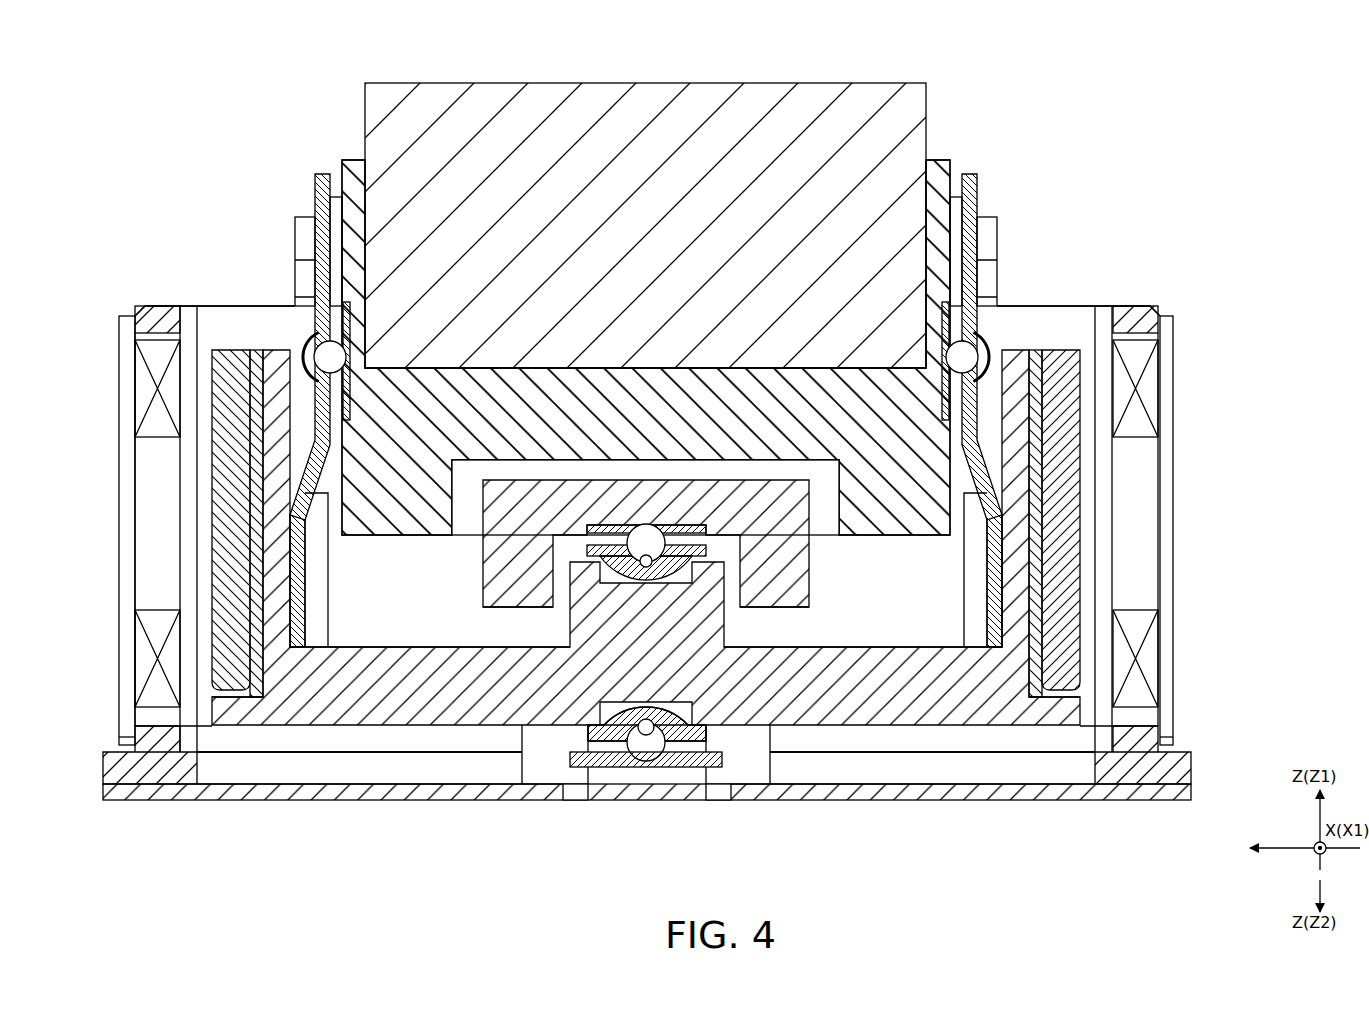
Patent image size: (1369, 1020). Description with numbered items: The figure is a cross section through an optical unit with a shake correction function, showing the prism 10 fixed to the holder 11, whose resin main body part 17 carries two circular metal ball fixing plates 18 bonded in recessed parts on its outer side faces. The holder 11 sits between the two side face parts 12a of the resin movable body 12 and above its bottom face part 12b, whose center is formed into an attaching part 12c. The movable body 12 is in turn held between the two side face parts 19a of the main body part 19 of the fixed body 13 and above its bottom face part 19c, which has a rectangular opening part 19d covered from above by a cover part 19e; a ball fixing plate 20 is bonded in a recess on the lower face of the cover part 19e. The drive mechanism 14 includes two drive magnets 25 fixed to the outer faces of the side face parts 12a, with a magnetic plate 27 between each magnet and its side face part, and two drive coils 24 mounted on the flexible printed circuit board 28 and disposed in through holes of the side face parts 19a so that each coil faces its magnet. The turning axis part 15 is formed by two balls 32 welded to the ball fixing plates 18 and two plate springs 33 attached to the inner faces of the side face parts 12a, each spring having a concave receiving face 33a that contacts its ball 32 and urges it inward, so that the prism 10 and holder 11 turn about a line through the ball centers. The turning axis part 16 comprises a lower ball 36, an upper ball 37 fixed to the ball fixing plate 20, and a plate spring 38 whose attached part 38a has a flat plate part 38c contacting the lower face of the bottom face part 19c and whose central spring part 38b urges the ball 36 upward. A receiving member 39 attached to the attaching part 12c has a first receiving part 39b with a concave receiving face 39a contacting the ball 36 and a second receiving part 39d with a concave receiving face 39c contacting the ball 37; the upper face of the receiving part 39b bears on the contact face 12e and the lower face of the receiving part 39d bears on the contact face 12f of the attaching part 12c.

The prism 10 is at (641, 83).
The holder 11 is at (940, 160).
The main body part 17 is at (940, 160).
The movable body 12 is at (300, 600).
The side face part 12a is at (990, 590).
The bottom face part 12b is at (858, 647).
The attaching part 12c is at (735, 635).
The contact face 12e is at (540, 735).
The contact face 12f is at (580, 545).
The fixed body 13 is at (385, 800).
The drive mechanism 14 is at (1210, 521).
The turning axis part 15 is at (1036, 338).
The turning axis part 16 is at (627, 845).
The ball fixing plate 18 is at (350, 312).
The main body part 19 is at (385, 800).
The side face part 19a is at (160, 306).
The bottom face part 19c is at (955, 800).
The opening part 19d is at (1030, 770).
The cover part 19e is at (520, 478).
The ball fixing plate 20 is at (612, 525).
The drive coil 24 is at (119, 395).
The drive magnet 25 is at (212, 490).
The magnetic plate 27 is at (256, 540).
The flexible printed circuit board 28 is at (1173, 455).
The ball 32 is at (350, 355).
The plate spring 33 is at (315, 185).
The receiving face 33a is at (314, 352).
The ball 36 is at (648, 762).
The ball 37 is at (650, 524).
The plate spring 38 is at (850, 800).
The attached part 38a is at (250, 800).
The spring part 38b is at (596, 768).
The flat plate part 38c is at (250, 800).
The receiving member 39 is at (685, 710).
The receiving face 39a is at (645, 722).
The receiving part 39b is at (685, 710).
The receiving face 39c is at (642, 560).
The receiving part 39d is at (682, 562).